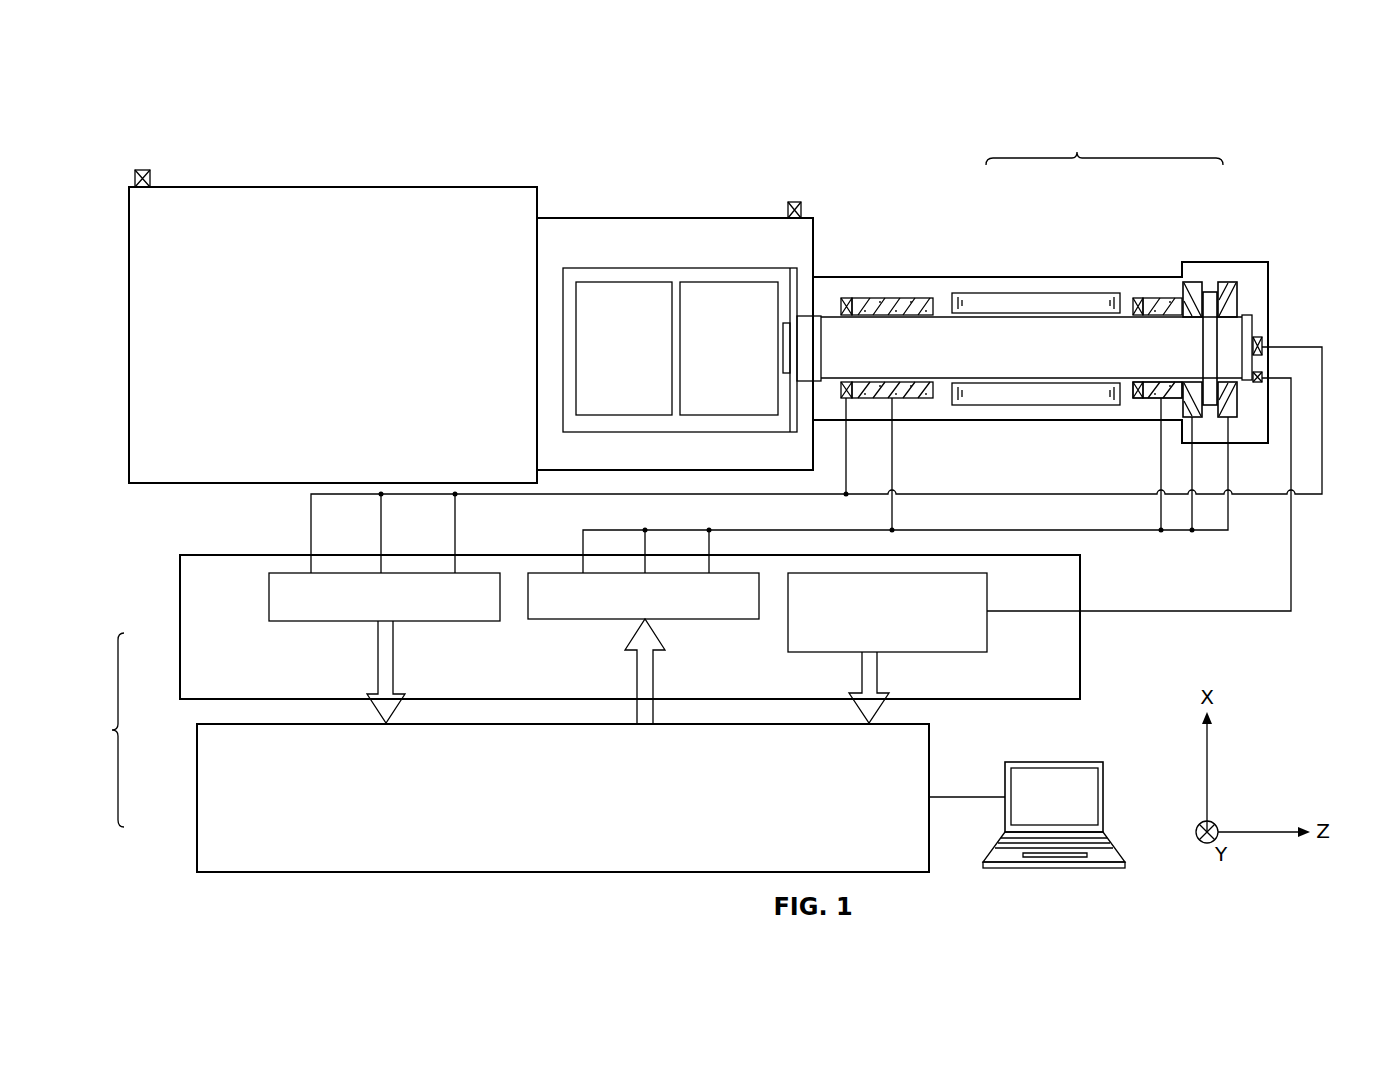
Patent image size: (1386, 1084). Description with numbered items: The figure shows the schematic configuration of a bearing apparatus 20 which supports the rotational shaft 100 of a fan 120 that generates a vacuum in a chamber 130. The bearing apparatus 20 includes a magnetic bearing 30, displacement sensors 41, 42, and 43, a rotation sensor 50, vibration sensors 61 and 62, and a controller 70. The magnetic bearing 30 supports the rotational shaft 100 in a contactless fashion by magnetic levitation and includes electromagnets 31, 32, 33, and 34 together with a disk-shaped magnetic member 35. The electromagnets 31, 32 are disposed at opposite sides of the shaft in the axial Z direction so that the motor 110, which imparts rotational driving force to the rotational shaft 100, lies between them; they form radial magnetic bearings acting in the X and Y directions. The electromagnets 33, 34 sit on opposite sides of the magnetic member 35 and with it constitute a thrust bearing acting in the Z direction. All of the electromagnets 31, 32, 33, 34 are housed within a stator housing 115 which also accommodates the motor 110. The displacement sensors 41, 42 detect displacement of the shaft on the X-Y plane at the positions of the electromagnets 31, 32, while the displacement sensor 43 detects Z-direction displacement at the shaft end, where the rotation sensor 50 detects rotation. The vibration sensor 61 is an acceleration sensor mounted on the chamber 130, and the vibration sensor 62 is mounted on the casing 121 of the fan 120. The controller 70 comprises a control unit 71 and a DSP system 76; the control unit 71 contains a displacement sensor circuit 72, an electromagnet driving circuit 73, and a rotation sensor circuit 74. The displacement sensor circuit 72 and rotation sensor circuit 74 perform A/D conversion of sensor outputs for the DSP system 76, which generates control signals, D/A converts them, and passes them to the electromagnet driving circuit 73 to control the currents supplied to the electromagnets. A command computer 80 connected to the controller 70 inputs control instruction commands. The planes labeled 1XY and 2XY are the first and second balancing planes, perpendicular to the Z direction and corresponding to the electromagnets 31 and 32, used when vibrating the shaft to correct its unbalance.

The bearing apparatus 20 is at (1277, 241).
The magnetic bearing 30 is at (1104, 145).
The electromagnet 31 is at (888, 300).
The electromagnet 32 is at (1157, 307).
The electromagnet 33 is at (1190, 292).
The electromagnet 34 is at (1225, 290).
The magnetic member 35 is at (1210, 314).
The displacement sensor 41 is at (846, 297).
The displacement sensor 42 is at (1137, 378).
The displacement sensor 43 is at (1262, 345).
The rotation sensor 50 is at (1266, 362).
The vibration sensor 61 is at (148, 168).
The vibration sensor 62 is at (797, 200).
The controller 70 is at (101, 730).
The control unit 71 is at (604, 627).
The displacement sensor circuit 72 is at (318, 622).
The electromagnet driving circuit 73 is at (568, 620).
The rotation sensor circuit 74 is at (808, 652).
The DSP system 76 is at (197, 800).
The command computer 80 is at (1067, 762).
The rotational shaft 100 is at (1005, 355).
The motor 110 is at (1068, 412).
The stator housing 115 is at (1125, 408).
The fan 120 is at (747, 150).
The casing 121 is at (590, 218).
The chamber 130 is at (434, 150).
The first balancing plane 1XY is at (910, 410).
The second balancing plane 2XY is at (1150, 410).